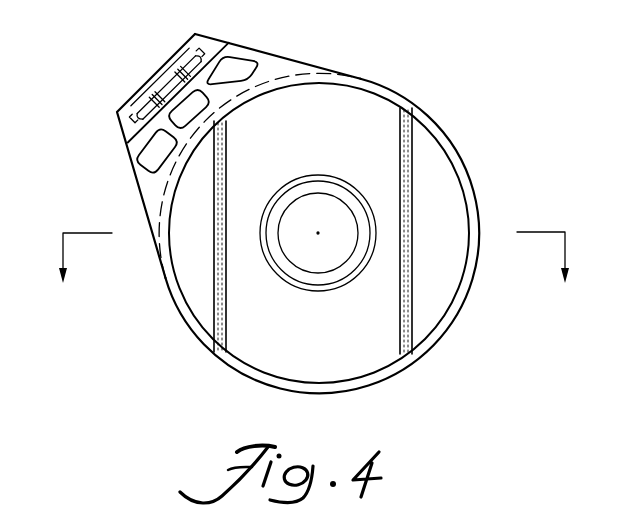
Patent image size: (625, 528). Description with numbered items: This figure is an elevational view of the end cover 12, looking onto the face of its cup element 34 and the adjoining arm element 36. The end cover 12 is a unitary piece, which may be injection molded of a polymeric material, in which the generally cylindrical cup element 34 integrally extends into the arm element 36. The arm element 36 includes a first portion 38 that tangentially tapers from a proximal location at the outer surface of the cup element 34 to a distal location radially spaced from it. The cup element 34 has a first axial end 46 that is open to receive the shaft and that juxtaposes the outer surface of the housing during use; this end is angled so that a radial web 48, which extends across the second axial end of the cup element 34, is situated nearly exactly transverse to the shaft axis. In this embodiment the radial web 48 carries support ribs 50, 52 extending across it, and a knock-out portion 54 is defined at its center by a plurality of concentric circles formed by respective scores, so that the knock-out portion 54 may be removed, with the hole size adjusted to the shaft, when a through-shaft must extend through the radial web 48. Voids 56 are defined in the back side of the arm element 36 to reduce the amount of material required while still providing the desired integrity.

The end cover 12 is at (410, 64).
The cup element 34 is at (466, 134).
The arm element 36 is at (120, 190).
The first portion 38 is at (260, 53).
The first axial end 46 is at (457, 302).
The radial web 48 is at (337, 143).
The support rib 50 is at (231, 308).
The support rib 52 is at (400, 310).
The knock-out portion 54 is at (318, 260).
The voids 56 is at (233, 67).